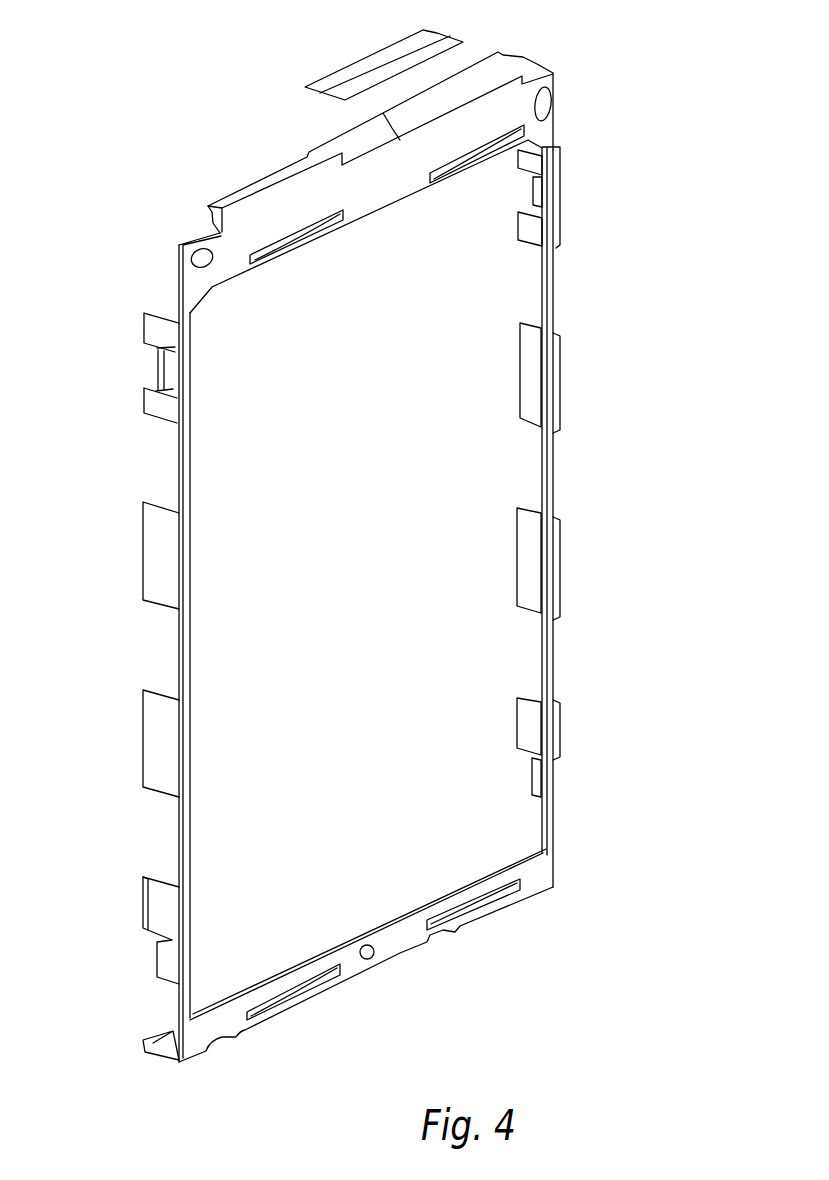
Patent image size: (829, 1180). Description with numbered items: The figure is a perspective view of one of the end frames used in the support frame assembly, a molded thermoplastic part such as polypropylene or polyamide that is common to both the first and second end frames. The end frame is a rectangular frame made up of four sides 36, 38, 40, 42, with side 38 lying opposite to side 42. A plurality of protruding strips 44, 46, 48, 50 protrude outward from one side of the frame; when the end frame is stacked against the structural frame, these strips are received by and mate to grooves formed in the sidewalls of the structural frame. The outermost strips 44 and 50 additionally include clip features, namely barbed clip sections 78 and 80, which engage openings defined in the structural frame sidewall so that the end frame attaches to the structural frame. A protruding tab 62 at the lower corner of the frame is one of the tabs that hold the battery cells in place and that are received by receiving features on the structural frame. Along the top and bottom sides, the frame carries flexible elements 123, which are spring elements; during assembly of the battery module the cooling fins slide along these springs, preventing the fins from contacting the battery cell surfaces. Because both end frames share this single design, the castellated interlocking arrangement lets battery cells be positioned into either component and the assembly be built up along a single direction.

The side 36 is at (246, 166).
The side 38 is at (558, 297).
The side 40 is at (402, 977).
The side 42 is at (176, 650).
The protruding strip 44 is at (157, 369).
The protruding strip 46 is at (143, 550).
The protruding strip 48 is at (143, 733).
The protruding strip 50 is at (143, 907).
The protruding tab 62 is at (145, 1043).
The barbed clip section 78 is at (160, 360).
The barbed clip section 80 is at (143, 877).
The flexible element 123 is at (525, 125).